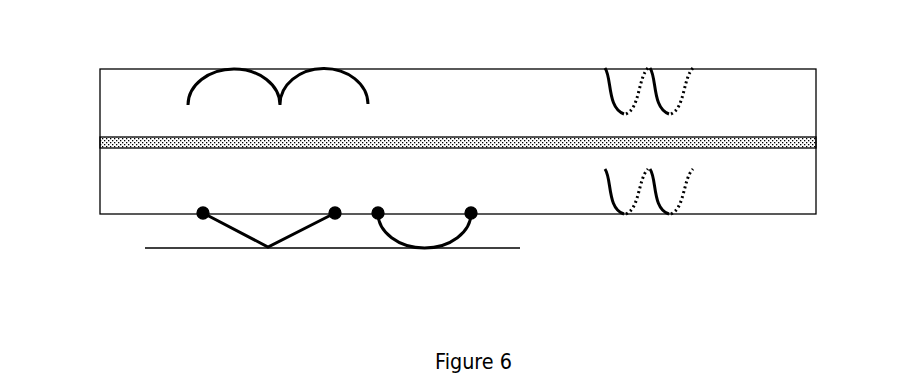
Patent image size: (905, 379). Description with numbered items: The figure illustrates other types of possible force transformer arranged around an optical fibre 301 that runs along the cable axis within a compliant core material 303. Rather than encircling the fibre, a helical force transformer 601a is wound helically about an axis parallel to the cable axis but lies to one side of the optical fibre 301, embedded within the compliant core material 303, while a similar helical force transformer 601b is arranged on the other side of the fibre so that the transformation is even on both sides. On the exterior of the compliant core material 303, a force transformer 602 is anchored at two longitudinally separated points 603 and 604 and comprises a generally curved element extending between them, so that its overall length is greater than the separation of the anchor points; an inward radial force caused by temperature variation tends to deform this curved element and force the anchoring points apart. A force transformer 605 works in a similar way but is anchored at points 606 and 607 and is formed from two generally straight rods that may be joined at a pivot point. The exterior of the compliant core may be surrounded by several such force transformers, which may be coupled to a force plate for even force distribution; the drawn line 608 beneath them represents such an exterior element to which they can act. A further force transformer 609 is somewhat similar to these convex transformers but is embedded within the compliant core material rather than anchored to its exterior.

The compliant core material 303 is at (816, 98).
The optical fibre 301 is at (816, 142).
The force transformer 609 is at (370, 88).
The helical force transformer 601a is at (655, 73).
The helical force transformer 601b is at (655, 211).
The reference line 608 is at (200, 250).
The force transformer 605 is at (290, 239).
The force transformer 602 is at (462, 233).
The anchor point 606 is at (204, 207).
The anchor point 607 is at (334, 207).
The anchor point 603 is at (380, 207).
The anchor point 604 is at (472, 207).